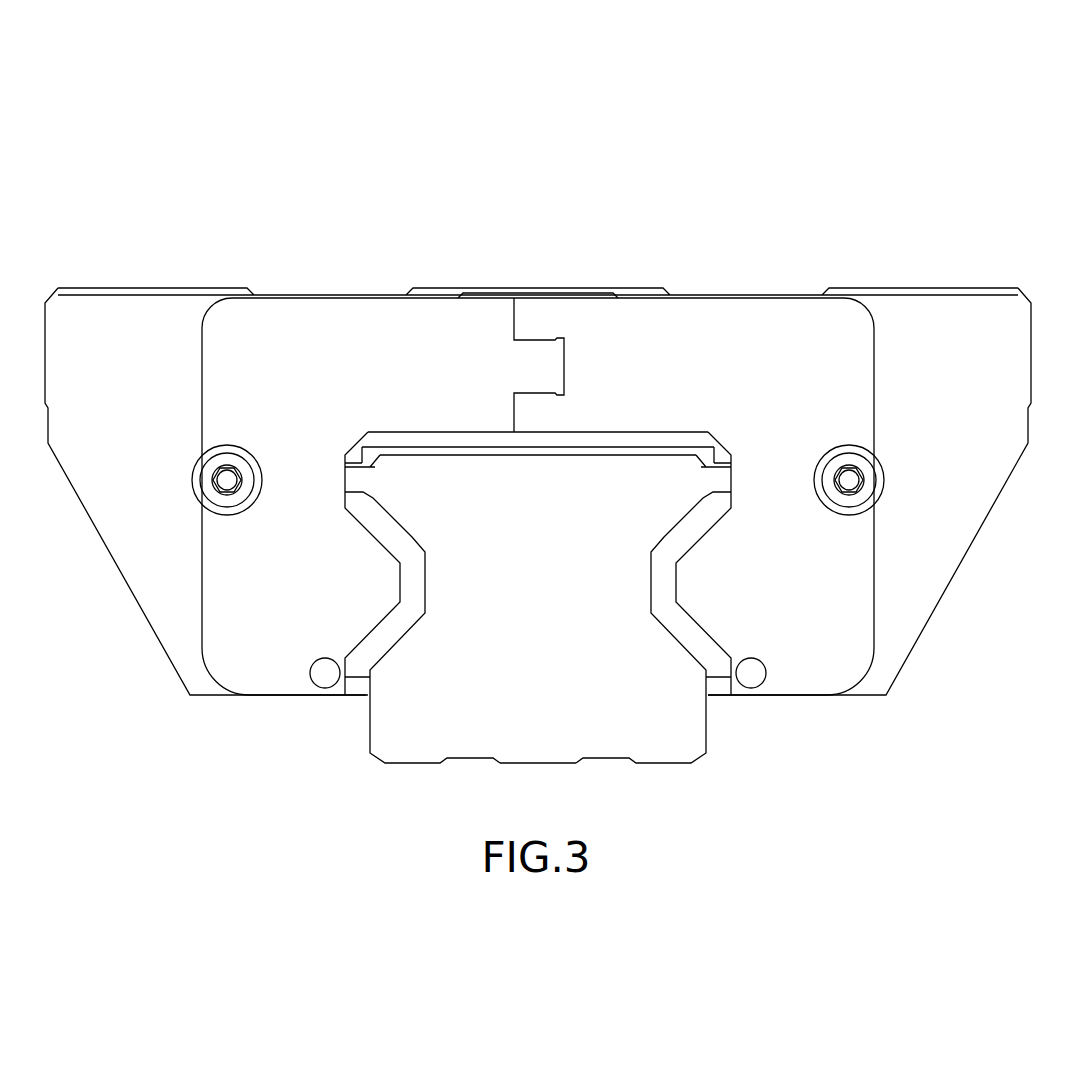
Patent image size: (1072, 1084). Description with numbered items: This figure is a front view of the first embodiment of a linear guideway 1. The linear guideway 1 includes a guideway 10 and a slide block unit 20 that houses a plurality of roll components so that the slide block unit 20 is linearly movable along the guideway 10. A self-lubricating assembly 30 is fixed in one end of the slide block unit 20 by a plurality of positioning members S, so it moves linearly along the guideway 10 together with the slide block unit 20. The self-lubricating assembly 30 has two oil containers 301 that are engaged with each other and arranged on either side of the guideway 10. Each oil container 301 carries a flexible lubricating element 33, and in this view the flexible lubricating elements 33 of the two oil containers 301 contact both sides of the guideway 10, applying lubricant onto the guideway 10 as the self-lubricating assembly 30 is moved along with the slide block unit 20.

The linear guideway 1 is at (72, 151).
The guideway 10 is at (370, 727).
The slide block unit 20 is at (898, 294).
The self-lubricating assembly 30 is at (452, 190).
The oil container 301 is at (425, 322).
The flexible lubricating element 33 is at (382, 523).
The positioning member S is at (200, 478).